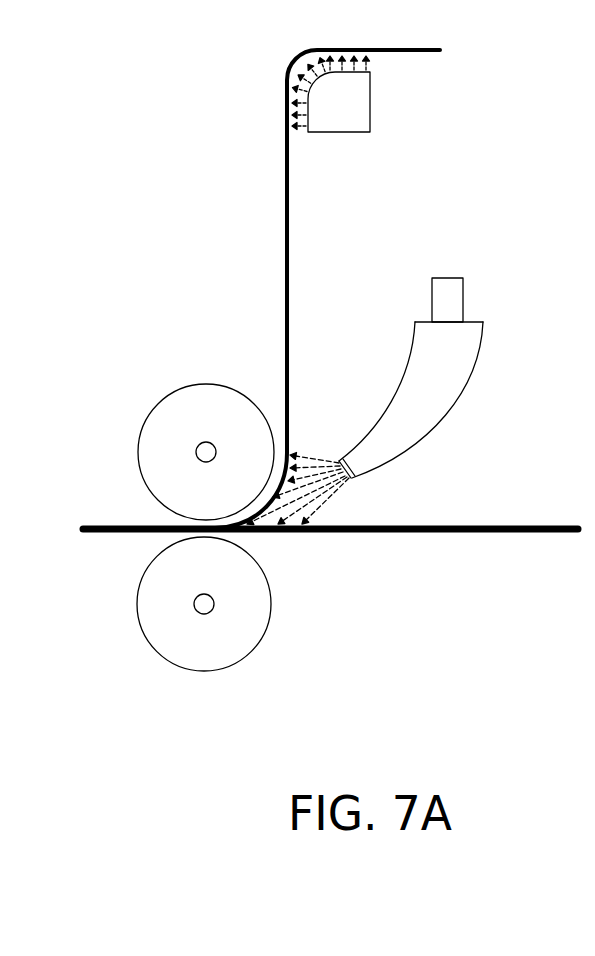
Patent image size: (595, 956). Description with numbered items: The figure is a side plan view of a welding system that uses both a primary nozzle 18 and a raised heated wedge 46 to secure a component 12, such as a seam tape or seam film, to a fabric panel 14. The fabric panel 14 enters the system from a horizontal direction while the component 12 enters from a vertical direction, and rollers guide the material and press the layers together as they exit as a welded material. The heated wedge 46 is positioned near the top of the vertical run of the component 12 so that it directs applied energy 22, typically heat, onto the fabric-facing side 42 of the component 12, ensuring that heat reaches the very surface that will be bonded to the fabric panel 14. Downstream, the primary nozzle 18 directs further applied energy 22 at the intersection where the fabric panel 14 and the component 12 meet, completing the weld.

The component 12 is at (272, 230).
The fabric panel 14 is at (475, 518).
The primary nozzle 18 is at (457, 368).
The applied energy 22 is at (347, 66).
The fabric-facing side 42 is at (284, 310).
The heated wedge 46 is at (363, 122).